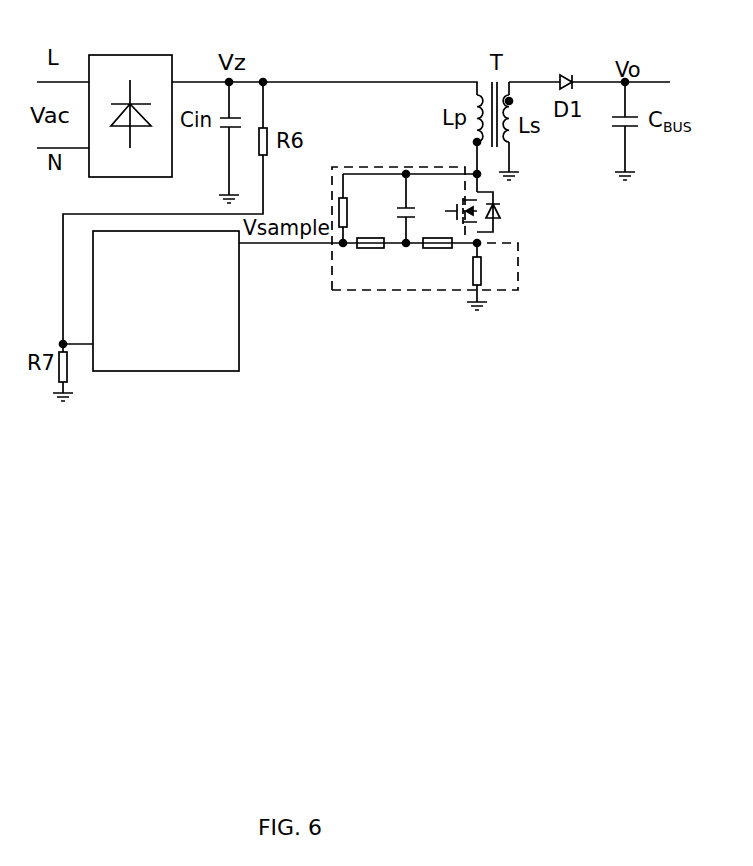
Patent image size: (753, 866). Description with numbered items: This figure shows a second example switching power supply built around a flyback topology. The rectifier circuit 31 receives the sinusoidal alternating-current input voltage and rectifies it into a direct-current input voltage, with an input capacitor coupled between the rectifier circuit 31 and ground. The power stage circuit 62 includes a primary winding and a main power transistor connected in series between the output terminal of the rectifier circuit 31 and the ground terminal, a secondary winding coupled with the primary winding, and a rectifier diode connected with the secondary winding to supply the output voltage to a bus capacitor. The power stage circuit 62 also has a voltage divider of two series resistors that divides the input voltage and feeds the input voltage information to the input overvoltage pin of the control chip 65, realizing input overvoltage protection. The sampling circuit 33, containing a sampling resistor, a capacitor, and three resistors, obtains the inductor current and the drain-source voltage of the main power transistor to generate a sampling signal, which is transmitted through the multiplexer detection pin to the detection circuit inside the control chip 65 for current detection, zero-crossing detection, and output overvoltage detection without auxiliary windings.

The rectifier circuit 31 is at (130, 116).
The control chip 65 is at (166, 301).
The sampling circuit 33 is at (373, 290).
The power stage circuit 62 is at (528, 67).